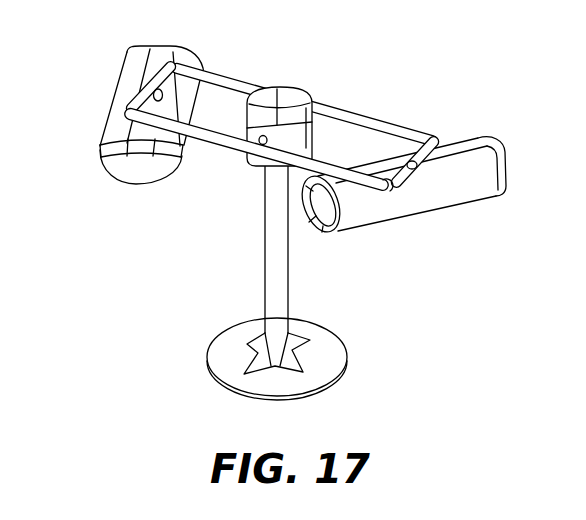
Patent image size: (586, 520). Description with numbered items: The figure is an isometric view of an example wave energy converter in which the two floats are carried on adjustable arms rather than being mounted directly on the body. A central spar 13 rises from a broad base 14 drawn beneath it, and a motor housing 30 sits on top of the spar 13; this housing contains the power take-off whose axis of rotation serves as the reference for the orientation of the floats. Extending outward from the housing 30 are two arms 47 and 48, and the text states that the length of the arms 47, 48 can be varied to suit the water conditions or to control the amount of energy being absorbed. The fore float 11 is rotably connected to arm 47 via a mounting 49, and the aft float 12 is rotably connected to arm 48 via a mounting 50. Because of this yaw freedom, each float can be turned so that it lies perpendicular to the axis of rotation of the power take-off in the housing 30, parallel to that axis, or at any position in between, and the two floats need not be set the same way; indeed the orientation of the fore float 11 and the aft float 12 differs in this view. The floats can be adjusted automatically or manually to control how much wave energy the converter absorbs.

The fore float 11 is at (134, 170).
The aft float 12 is at (415, 210).
The spar 13 is at (267, 282).
The base 14 is at (332, 353).
The motor housing 30 is at (276, 89).
The arm 47 is at (224, 142).
The arm 48 is at (372, 188).
The mounting 49 is at (118, 92).
The mounting 50 is at (414, 170).